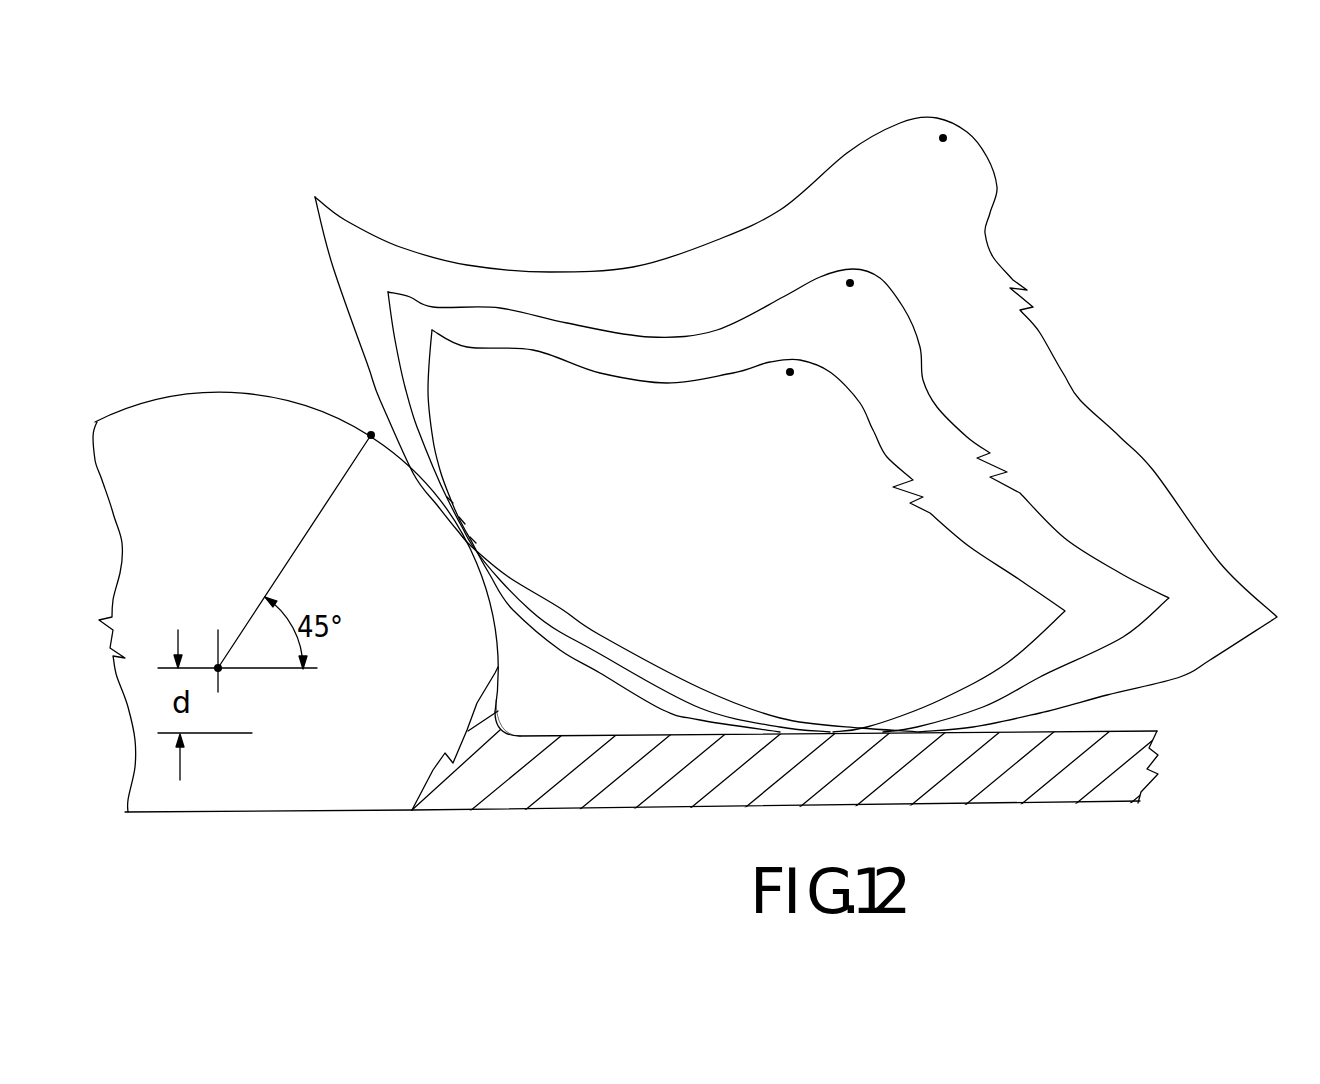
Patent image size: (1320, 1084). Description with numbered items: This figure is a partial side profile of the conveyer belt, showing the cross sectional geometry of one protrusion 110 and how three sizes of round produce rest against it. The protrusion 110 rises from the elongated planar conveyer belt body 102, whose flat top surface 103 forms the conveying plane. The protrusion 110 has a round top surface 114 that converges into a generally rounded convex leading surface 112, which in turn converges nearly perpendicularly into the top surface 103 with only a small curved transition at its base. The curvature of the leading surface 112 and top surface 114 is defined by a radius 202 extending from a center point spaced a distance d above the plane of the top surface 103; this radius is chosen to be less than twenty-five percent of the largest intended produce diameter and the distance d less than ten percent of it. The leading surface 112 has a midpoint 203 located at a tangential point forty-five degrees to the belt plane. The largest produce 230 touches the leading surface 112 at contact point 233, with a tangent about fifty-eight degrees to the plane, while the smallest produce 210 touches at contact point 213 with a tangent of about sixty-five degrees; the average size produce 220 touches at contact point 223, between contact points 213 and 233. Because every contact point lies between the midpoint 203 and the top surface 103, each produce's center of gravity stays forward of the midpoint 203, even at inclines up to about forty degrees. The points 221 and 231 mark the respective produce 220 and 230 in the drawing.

The conveyer belt body 102 is at (841, 770).
The top surface 103 is at (1117, 730).
The protrusion 110 is at (306, 532).
The leading surface 112 is at (505, 665).
The round top surface 114 is at (180, 392).
The radius 202 is at (272, 555).
The midpoint 203 is at (371, 435).
The smallest produce 210 is at (746, 531).
The contact point 213 is at (473, 540).
The average size produce 220 is at (778, 500).
The peak of second blade 221 is at (850, 283).
The contact point 223 is at (463, 520).
The largest produce 230 is at (814, 424).
The peak of third blade 231 is at (943, 138).
The contact point 233 is at (453, 503).